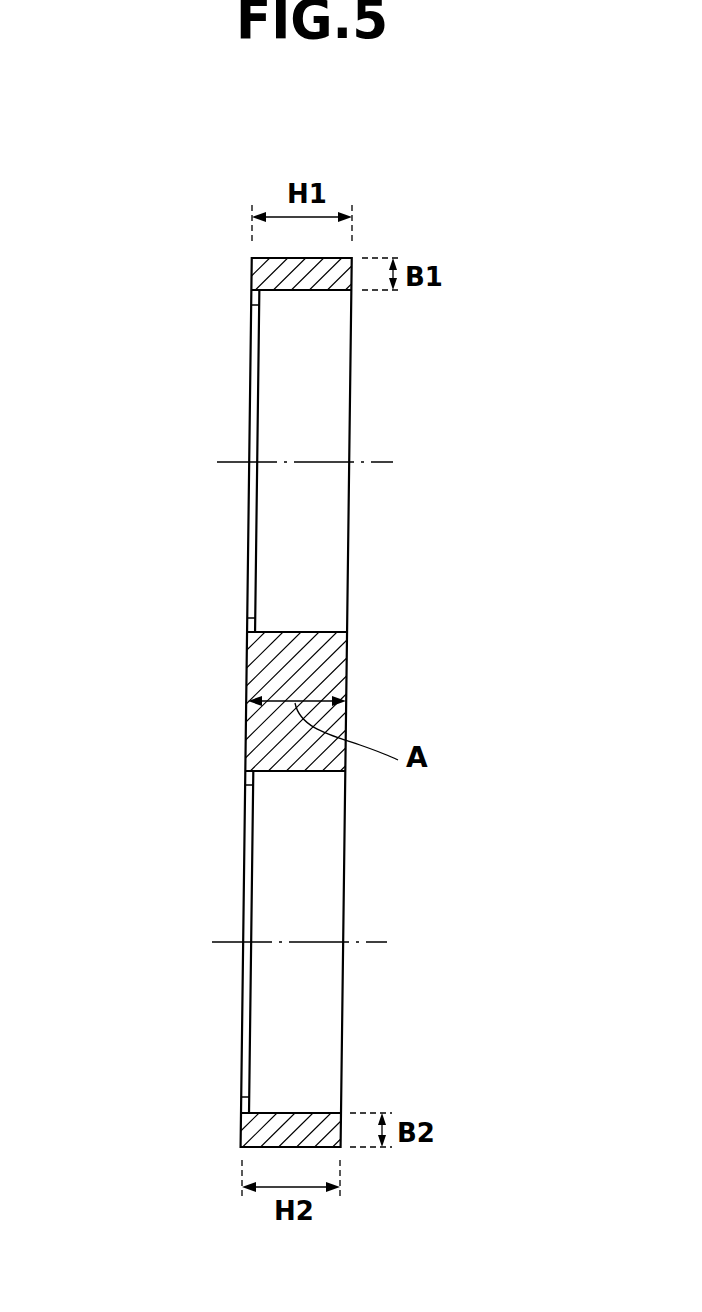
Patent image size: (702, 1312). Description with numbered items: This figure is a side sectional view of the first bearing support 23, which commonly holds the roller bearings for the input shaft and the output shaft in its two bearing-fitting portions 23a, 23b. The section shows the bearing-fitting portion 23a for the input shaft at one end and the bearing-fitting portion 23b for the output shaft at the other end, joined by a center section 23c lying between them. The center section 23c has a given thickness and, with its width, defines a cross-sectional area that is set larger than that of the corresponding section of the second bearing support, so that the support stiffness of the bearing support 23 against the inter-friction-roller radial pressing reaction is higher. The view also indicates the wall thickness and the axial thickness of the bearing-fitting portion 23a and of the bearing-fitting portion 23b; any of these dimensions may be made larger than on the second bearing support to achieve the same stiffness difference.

The first bearing support 23 is at (232, 291).
The bearing-fitting portion 23a is at (305, 291).
The bearing-fitting portion 23b is at (300, 1112).
The center section 23c is at (320, 650).